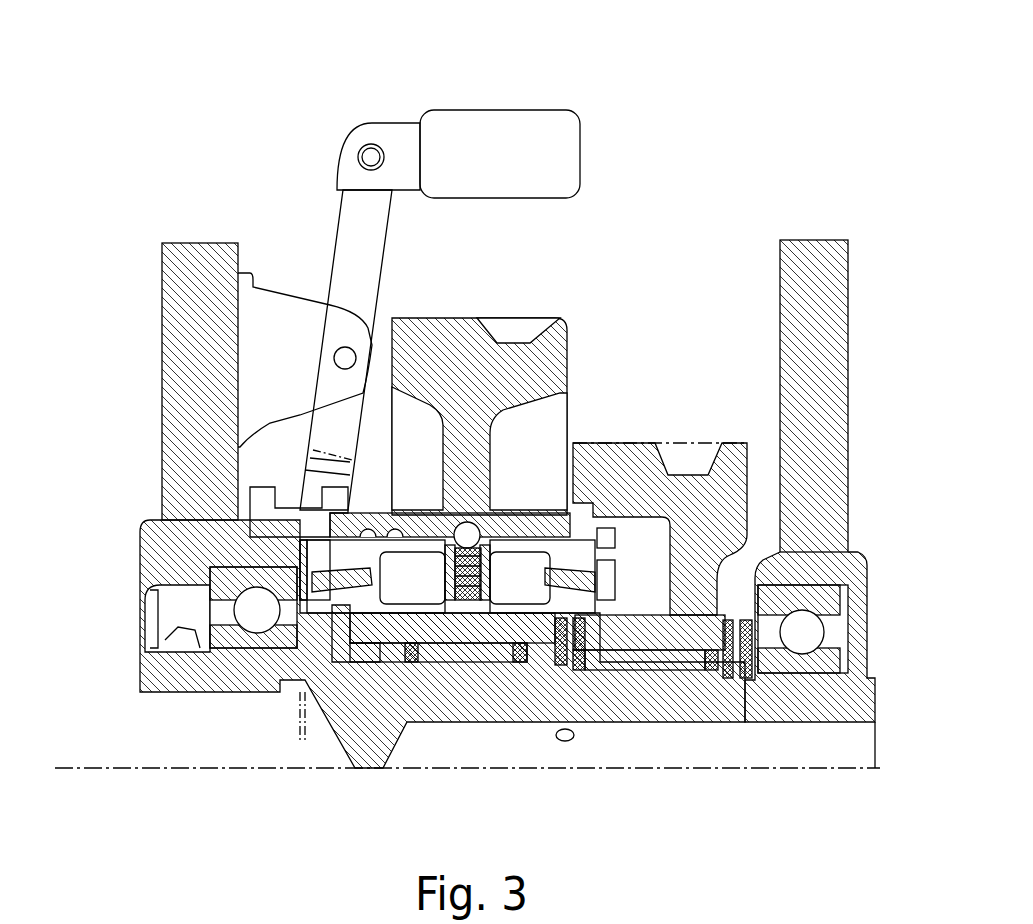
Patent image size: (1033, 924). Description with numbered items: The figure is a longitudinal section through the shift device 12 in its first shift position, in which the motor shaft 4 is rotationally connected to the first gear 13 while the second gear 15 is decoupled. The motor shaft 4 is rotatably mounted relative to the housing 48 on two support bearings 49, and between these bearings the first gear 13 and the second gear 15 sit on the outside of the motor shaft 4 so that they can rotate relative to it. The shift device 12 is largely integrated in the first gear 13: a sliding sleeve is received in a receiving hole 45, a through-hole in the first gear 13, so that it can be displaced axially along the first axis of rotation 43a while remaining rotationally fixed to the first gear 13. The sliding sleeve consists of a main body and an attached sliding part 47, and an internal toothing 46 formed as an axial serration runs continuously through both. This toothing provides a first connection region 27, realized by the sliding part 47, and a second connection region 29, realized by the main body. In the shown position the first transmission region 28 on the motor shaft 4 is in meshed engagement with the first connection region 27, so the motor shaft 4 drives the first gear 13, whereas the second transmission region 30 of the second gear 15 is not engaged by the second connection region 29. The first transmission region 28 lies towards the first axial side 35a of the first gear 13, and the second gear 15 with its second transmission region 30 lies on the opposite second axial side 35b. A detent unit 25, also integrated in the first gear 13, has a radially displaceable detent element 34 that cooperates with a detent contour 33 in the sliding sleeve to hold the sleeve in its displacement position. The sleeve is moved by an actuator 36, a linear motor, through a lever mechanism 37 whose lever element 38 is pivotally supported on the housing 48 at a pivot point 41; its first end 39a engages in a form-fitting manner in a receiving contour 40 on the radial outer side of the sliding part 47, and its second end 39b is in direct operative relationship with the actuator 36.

The motor shaft 4 is at (360, 715).
The shift device 12 is at (316, 233).
The first gear 13 is at (497, 335).
The second gear 15 is at (660, 482).
The detent unit 25 is at (435, 662).
The first connection region 27 is at (287, 550).
The first transmission region 28 is at (293, 537).
The second connection region 29 is at (600, 680).
The second transmission region 30 is at (620, 505).
The detent contour 33 is at (466, 605).
The detent element 34 is at (472, 540).
The first axial side 35a is at (386, 345).
The second axial side 35b is at (582, 326).
The actuator 36 is at (495, 135).
The lever mechanism 37 is at (316, 274).
The lever element 38 is at (340, 215).
The first end 39a is at (297, 457).
The second end 39b is at (350, 115).
The receiving contour 40 is at (292, 498).
The pivot point 41 is at (345, 358).
The first axis of rotation 43a is at (82, 770).
The receiving hole 45 is at (492, 525).
The internal toothing 46 is at (520, 650).
The sliding part 47 is at (340, 493).
The housing 48 is at (180, 290).
The support bearings 49 is at (257, 610).